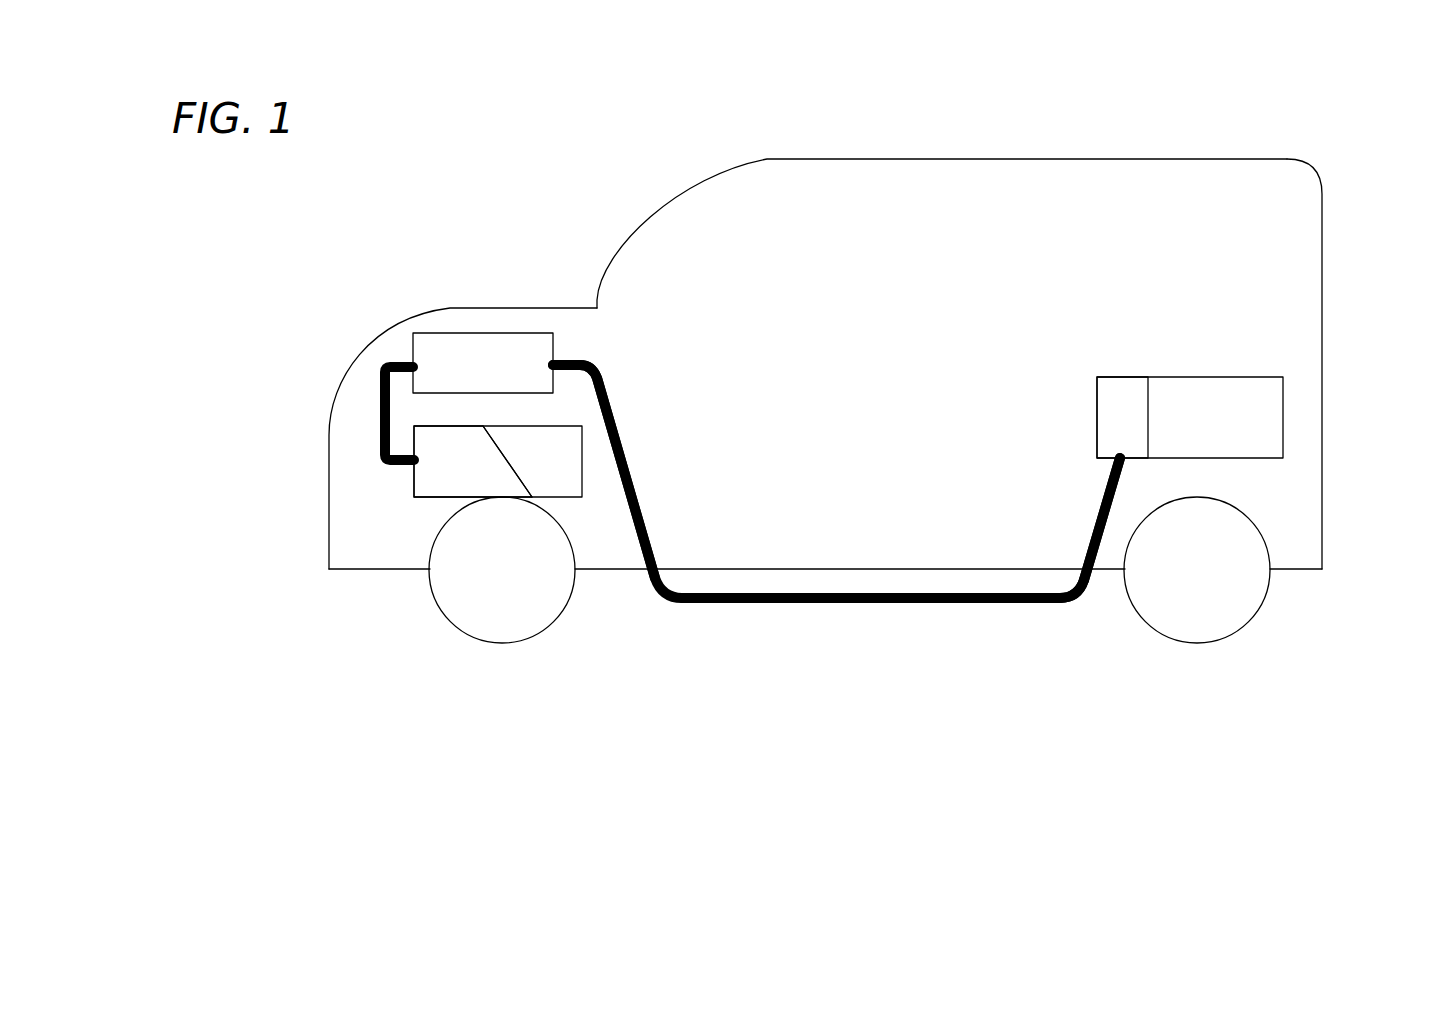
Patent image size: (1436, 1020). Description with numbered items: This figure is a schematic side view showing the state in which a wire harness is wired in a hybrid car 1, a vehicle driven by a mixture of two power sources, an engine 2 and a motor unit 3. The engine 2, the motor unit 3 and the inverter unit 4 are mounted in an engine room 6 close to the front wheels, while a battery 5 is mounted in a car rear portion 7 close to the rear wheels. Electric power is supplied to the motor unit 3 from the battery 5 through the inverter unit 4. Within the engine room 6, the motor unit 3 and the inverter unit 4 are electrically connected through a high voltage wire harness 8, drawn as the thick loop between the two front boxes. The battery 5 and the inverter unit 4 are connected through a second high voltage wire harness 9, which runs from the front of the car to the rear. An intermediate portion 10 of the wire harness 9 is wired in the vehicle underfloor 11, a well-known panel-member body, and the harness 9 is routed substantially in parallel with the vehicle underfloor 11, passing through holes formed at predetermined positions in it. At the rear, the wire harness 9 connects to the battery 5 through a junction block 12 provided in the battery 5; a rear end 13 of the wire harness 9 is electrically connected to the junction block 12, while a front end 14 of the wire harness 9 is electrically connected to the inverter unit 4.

The hybrid car 1 is at (503, 193).
The engine 2 is at (558, 472).
The motor unit 3 is at (432, 487).
The inverter unit 4 is at (448, 353).
The battery 5 is at (1222, 393).
The engine room 6 is at (355, 532).
The car rear portion 7 is at (1288, 492).
The high voltage wire harness 8 is at (380, 398).
The high voltage wire harness 9 is at (752, 603).
The intermediate portion 10 is at (893, 605).
The vehicle underfloor 11 is at (1007, 572).
The junction block 12 is at (1110, 390).
The rear end 13 is at (1107, 485).
The front end 14 is at (592, 362).